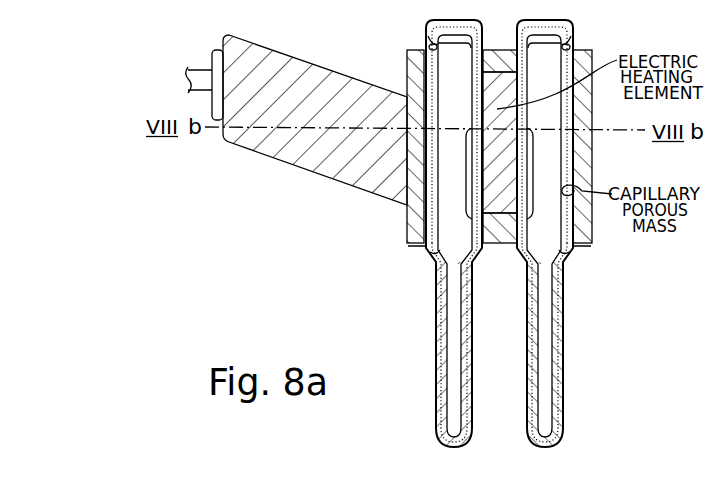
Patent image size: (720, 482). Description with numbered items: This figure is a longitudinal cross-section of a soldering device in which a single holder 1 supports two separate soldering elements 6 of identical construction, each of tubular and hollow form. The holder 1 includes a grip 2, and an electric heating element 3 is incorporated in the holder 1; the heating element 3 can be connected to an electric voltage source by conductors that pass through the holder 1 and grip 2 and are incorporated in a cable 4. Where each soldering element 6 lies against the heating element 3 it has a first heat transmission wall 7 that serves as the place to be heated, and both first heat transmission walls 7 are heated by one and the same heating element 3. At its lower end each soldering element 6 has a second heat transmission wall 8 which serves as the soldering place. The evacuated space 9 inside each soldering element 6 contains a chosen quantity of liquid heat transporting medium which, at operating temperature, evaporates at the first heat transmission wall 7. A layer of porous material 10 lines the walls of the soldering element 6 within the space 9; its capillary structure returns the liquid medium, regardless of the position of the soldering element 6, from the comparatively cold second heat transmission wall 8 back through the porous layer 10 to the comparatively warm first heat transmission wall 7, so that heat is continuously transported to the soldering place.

The holder 1 is at (579, 148).
The grip 2 is at (363, 163).
The electric heating element 3 is at (506, 153).
The cable 4 is at (201, 70).
The soldering element 6 is at (541, 22).
The first heat transmission wall 7 is at (498, 173).
The second heat transmission wall 8 is at (540, 445).
The evacuated space 9 is at (461, 88).
The layer of porous material 10 is at (428, 38).